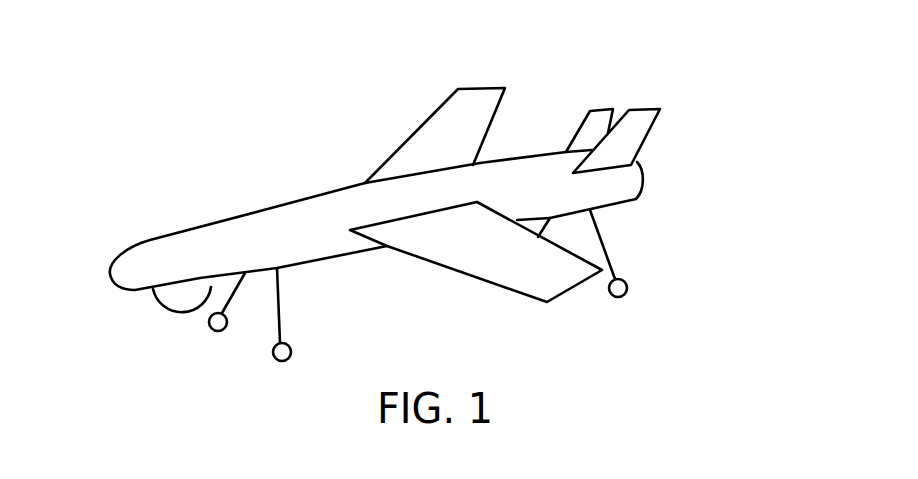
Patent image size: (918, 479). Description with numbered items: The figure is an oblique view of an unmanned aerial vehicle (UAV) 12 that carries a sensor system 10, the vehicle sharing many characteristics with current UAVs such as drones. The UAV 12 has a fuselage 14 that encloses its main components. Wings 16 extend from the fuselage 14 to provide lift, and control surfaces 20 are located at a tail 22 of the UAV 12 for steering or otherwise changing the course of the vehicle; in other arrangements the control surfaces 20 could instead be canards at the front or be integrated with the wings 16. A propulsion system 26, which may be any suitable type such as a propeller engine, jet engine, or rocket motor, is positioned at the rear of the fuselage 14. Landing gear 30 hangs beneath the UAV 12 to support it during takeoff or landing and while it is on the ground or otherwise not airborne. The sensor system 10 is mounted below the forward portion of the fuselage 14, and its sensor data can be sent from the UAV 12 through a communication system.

The sensor system 10 is at (180, 302).
The unmanned aerial vehicle 12 is at (170, 182).
The fuselage 14 is at (155, 258).
The wings 16 is at (445, 123).
The control surfaces 20 is at (598, 120).
The tail 22 is at (672, 129).
The propulsion system 26 is at (668, 179).
The landing gear 30 is at (282, 318).